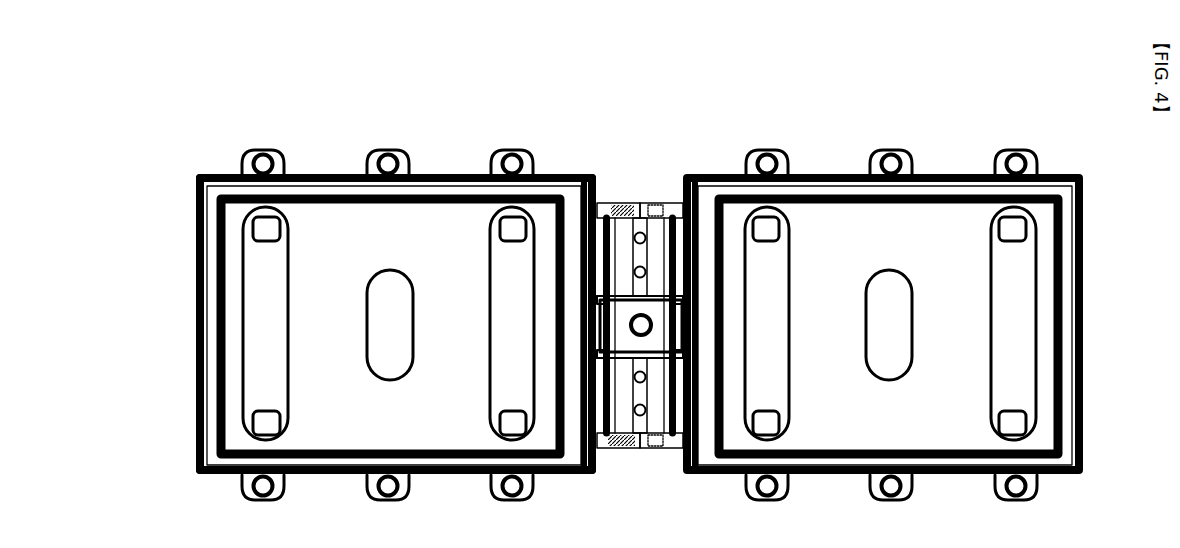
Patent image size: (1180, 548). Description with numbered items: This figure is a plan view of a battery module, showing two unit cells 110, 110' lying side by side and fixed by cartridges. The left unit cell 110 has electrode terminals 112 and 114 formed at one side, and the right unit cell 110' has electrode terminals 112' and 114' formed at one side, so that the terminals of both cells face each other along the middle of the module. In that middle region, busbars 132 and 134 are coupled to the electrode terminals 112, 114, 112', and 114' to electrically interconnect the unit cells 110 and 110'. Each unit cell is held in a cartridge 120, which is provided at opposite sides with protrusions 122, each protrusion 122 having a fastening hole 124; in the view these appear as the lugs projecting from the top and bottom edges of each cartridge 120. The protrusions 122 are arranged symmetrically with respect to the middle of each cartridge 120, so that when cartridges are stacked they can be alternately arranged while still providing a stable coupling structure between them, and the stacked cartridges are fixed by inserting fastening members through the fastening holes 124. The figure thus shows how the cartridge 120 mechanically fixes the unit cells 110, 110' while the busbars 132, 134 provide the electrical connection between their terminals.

The unit cell 110 is at (368, 281).
The unit cell 110' is at (883, 302).
The electrode terminal 112 is at (604, 271).
The electrode terminal 112' is at (688, 284).
The electrode terminal 114 is at (589, 483).
The electrode terminal 114' is at (678, 487).
The cartridge 120 is at (243, 174).
The protrusion 122 is at (285, 173).
The fastening hole 124 is at (264, 168).
The busbar 132 is at (641, 206).
The busbar 134 is at (638, 446).